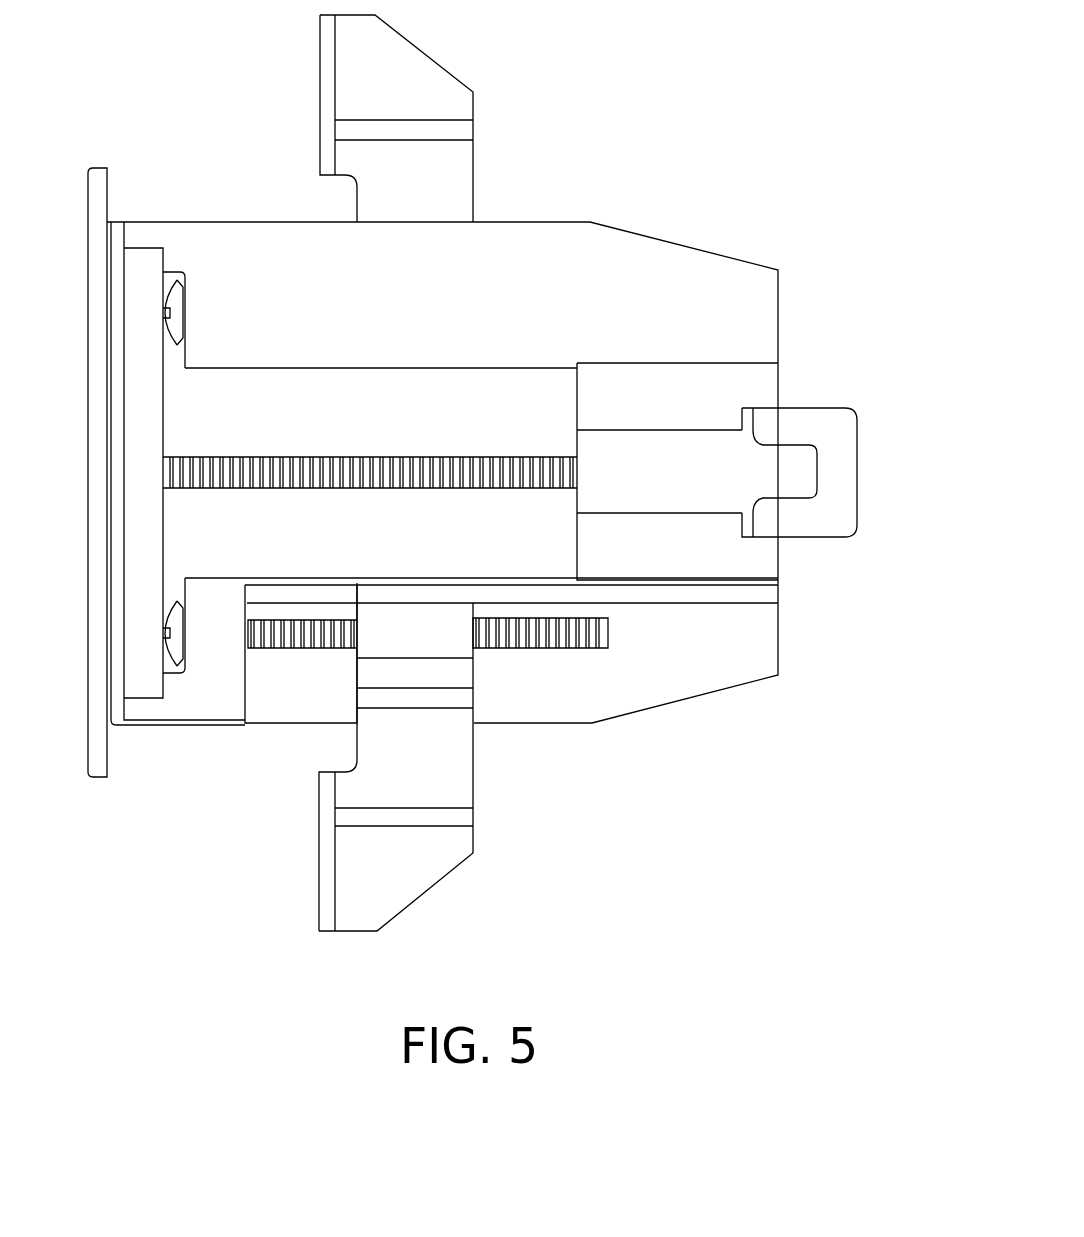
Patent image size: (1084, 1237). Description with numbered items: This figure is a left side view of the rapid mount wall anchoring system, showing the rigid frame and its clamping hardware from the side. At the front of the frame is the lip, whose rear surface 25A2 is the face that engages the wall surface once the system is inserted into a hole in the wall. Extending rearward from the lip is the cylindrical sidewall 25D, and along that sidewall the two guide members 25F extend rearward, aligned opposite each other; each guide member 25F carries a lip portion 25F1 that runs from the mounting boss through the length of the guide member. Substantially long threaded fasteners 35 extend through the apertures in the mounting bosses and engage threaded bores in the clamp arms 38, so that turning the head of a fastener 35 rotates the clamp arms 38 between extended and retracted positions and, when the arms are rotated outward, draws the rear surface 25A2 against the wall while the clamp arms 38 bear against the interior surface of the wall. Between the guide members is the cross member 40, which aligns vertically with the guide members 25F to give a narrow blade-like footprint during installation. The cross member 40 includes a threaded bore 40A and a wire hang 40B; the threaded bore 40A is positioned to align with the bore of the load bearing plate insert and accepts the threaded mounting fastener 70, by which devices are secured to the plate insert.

The clamp arm 38 is at (420, 52).
The rear surface 25A2 is at (110, 198).
The guide member 25F is at (668, 300).
The lip portion 25F1 is at (435, 368).
The sidewall 25D is at (163, 510).
The threaded mounting fastener 70 is at (330, 457).
The threaded fastener 35 is at (298, 640).
The cross member 40 is at (744, 473).
The threaded bore 40A is at (702, 485).
The wire hang 40B is at (853, 438).